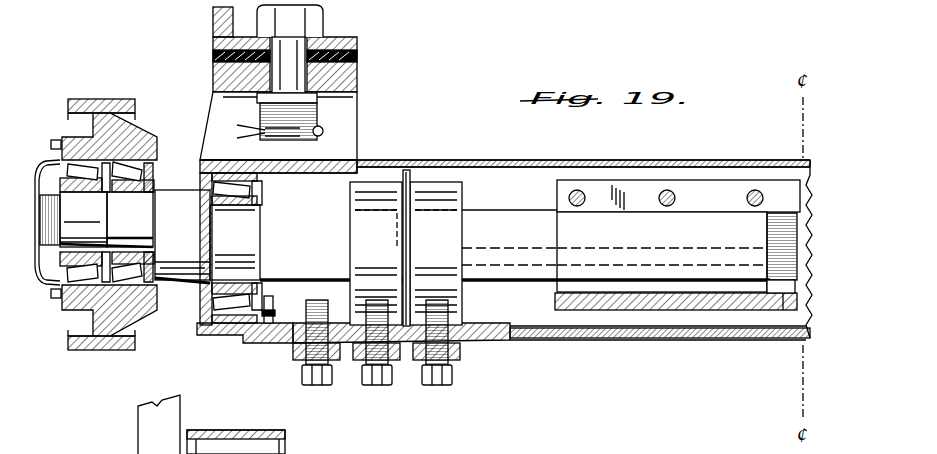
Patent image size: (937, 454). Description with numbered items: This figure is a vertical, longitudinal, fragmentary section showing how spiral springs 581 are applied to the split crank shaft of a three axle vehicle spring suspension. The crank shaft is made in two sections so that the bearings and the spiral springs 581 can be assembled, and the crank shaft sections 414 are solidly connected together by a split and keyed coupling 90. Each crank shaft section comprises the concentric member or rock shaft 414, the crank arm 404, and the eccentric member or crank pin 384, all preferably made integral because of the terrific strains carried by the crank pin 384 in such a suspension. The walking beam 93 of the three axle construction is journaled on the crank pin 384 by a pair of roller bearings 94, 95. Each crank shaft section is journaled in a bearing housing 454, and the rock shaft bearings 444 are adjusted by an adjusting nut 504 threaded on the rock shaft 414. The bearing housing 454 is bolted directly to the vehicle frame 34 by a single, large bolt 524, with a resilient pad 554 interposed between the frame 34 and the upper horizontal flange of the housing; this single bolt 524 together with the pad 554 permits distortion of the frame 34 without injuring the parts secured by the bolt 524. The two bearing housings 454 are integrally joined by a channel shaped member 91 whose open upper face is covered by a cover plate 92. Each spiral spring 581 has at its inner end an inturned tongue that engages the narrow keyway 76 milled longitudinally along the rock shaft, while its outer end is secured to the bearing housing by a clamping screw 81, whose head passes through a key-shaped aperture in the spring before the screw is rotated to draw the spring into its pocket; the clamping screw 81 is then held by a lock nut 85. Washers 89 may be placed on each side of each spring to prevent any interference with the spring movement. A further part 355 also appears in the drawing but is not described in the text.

The vehicle frame 34 is at (213, 18).
The bolt 524 is at (323, 23).
The resilient pad 554 is at (360, 58).
The walking beam 93 is at (95, 98).
The roller bearing 94 is at (50, 160).
The roller bearing 95 is at (155, 155).
The eccentric member or crank pin 384 is at (96, 219).
The crank arm 404 is at (207, 236).
The bearing housing 454 is at (218, 333).
The rock shaft bearing 444 is at (233, 318).
The adjusting nut 504 is at (268, 323).
The cover plate 92 is at (768, 160).
The channel shaped member 91 is at (770, 339).
The spiral spring 581 is at (463, 197).
The washer 89 is at (411, 173).
The split and keyed coupling 90 is at (557, 190).
The crank shaft section (rock shaft) 414 is at (676, 261).
The keyway 76 is at (783, 312).
The lock nut 85 is at (460, 354).
The clamping screw 81 is at (430, 388).
The bracket 355 is at (148, 436).